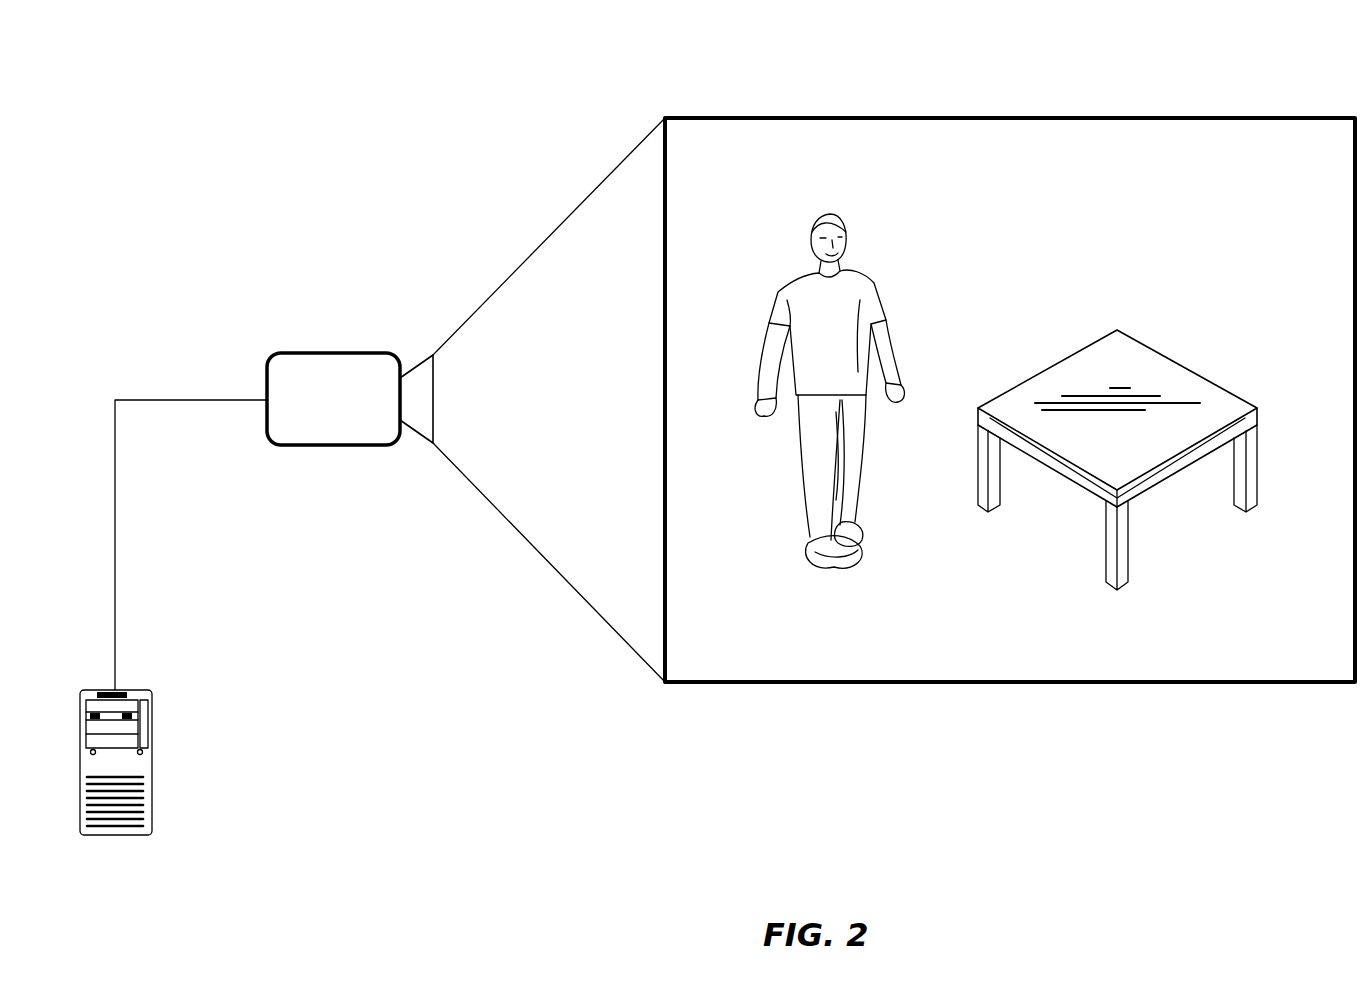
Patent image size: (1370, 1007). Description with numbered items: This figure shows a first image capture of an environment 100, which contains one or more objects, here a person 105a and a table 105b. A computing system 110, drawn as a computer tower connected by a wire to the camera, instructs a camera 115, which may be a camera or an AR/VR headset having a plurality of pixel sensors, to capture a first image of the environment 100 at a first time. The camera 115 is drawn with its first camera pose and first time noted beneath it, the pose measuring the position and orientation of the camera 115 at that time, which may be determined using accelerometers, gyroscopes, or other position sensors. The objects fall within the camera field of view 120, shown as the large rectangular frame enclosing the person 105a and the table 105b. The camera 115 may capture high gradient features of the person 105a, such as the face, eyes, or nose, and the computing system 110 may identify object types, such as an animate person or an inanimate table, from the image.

The environment 100 is at (1010, 356).
The person 105a is at (861, 274).
The table 105b is at (1173, 378).
The computing system 110 is at (176, 781).
The camera 115 is at (340, 446).
The camera field of view 120 is at (1085, 118).